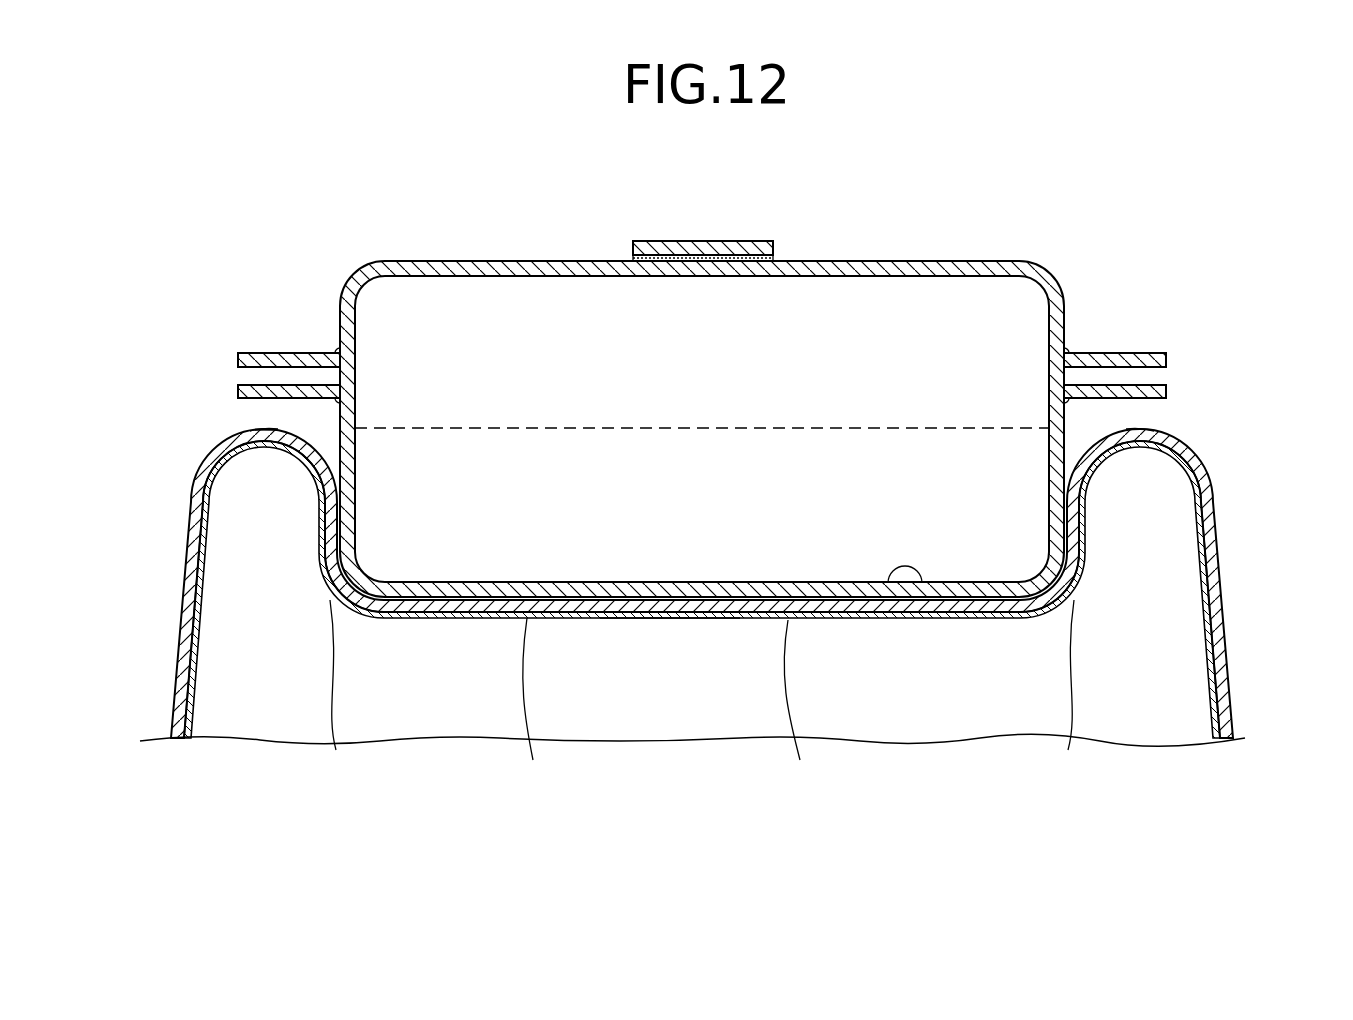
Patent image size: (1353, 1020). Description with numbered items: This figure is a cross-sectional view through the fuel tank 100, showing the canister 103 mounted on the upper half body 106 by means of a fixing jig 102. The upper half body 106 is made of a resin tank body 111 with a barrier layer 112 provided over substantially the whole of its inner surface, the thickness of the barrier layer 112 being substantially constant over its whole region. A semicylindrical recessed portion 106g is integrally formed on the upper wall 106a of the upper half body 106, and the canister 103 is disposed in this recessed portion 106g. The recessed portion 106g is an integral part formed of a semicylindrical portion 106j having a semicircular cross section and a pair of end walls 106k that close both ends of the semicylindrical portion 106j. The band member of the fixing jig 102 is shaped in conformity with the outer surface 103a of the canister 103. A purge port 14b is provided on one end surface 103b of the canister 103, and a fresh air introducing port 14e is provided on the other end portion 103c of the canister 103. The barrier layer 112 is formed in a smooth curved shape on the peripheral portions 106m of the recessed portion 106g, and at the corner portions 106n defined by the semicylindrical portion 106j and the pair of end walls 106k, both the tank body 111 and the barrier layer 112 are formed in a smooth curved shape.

The fuel tank 100 is at (316, 212).
The fixing jig 102 is at (705, 241).
The canister 103 is at (513, 261).
The outer surface of the canister 103a is at (600, 261).
The one end surface of the canister 103b is at (1066, 333).
The other end portion of the canister 103c is at (340, 337).
The fresh air introducing port 14e is at (267, 353).
The purge port 14b is at (1138, 353).
The upper half body 106 is at (189, 528).
The upper wall 106a is at (276, 430).
The recessed portion 106g is at (672, 618).
The semicylindrical portion 106j is at (803, 715).
The end walls 106k is at (320, 535).
The peripheral portions 106m is at (278, 427).
The corner portions 106n is at (704, 705).
The tank body 111 is at (922, 583).
The barrier layer 112 is at (531, 714).